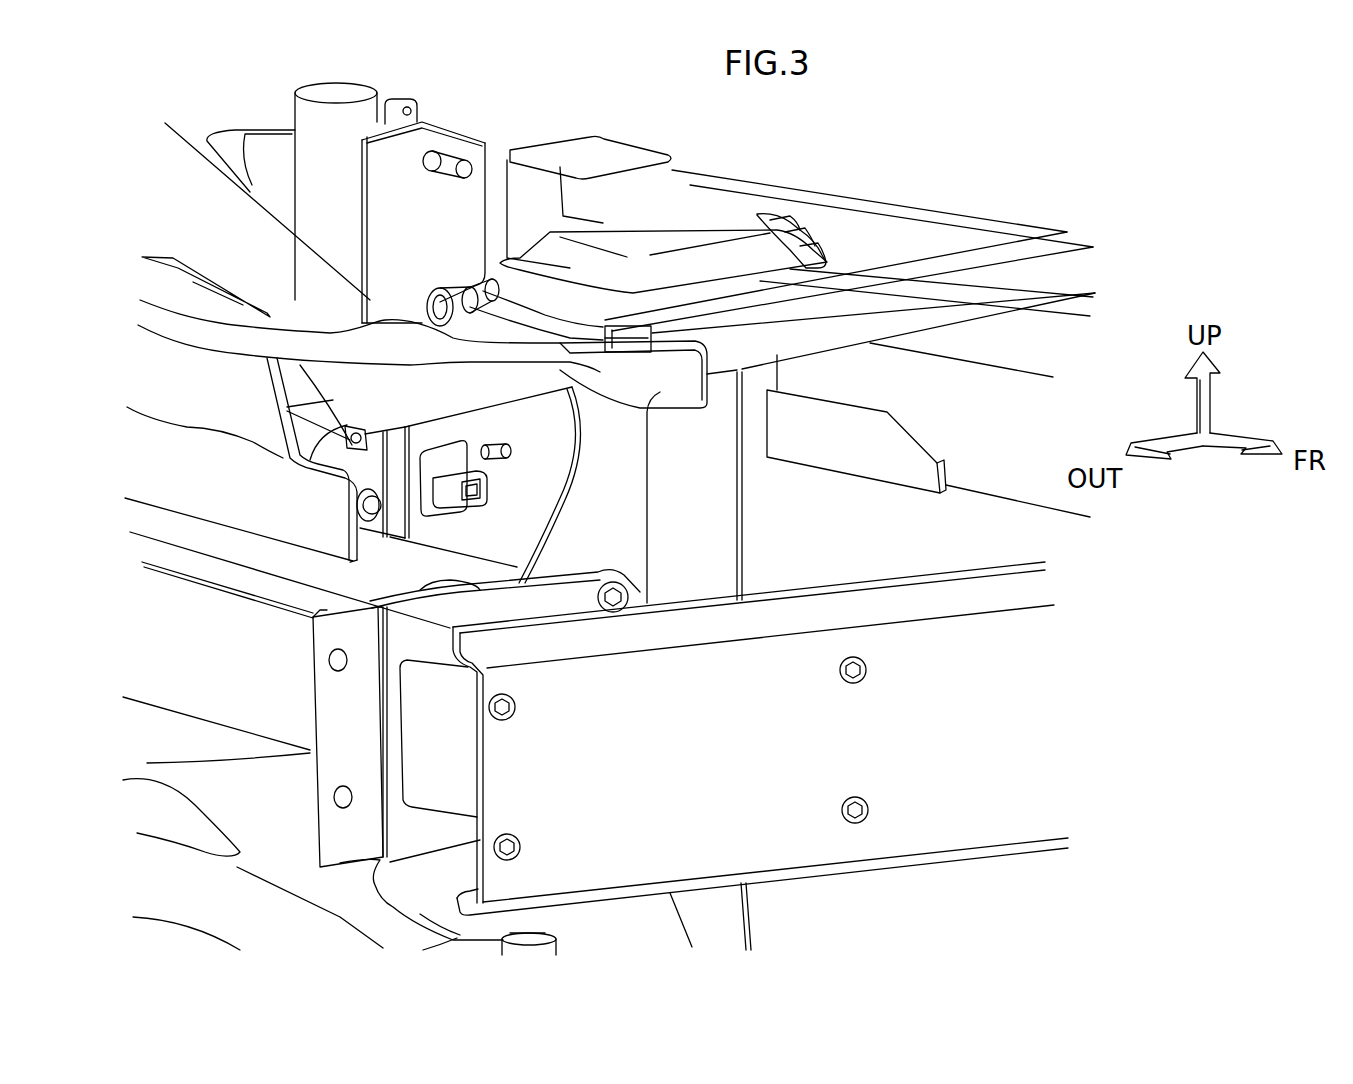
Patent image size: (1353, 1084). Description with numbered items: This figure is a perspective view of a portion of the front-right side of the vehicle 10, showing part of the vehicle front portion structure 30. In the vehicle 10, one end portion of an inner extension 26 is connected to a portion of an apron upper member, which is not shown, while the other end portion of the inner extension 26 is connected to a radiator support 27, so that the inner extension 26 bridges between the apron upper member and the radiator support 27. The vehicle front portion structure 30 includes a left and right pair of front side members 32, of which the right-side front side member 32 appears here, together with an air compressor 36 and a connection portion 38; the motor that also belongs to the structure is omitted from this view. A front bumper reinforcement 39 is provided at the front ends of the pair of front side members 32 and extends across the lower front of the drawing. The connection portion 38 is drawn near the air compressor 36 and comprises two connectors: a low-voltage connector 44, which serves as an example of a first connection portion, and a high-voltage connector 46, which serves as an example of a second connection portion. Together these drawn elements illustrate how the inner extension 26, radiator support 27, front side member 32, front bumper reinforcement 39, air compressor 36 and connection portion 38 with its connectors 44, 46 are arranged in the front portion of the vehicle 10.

The vehicle 10 is at (1012, 177).
The inner extension 26 is at (202, 335).
The radiator support 27 is at (1053, 272).
The vehicle front portion structure 30 is at (758, 510).
The front side member 32 is at (170, 678).
The air compressor 36 is at (505, 511).
The connection portion 38 is at (505, 483).
The front bumper reinforcement 39 is at (930, 803).
The low-voltage connector 44 is at (503, 440).
The high-voltage connector 46 is at (453, 472).